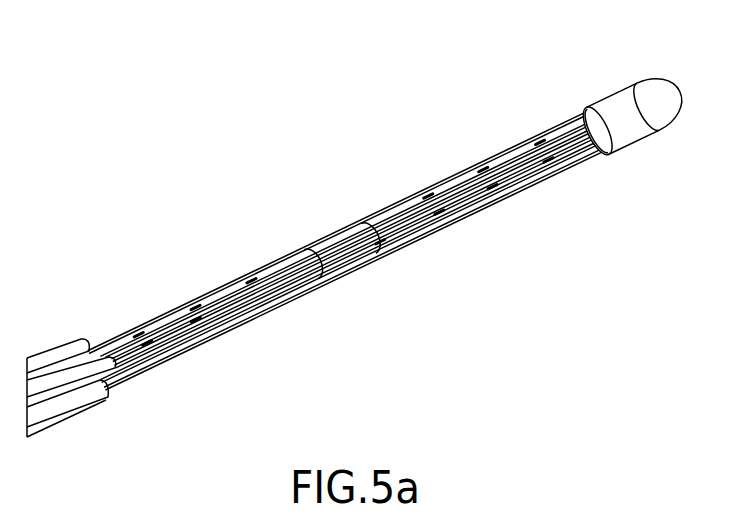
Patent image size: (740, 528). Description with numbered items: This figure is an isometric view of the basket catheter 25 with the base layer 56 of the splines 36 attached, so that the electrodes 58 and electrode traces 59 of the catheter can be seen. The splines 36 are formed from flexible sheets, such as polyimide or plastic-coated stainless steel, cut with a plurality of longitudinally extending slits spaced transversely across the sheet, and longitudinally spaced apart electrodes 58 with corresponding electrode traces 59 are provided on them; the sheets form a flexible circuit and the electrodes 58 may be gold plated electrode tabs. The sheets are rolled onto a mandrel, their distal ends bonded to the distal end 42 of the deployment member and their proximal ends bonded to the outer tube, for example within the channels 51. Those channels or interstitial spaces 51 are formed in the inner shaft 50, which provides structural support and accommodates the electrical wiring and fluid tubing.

The basket catheter 25 is at (358, 241).
The splines 36 is at (163, 353).
The distal end of the deployment member 42 is at (645, 83).
The inner shaft 50 is at (71, 370).
The channels or interstitial spaces 51 is at (70, 399).
The base layer 56 is at (350, 266).
The electrodes 58 is at (548, 158).
The electrode traces 59 is at (216, 323).